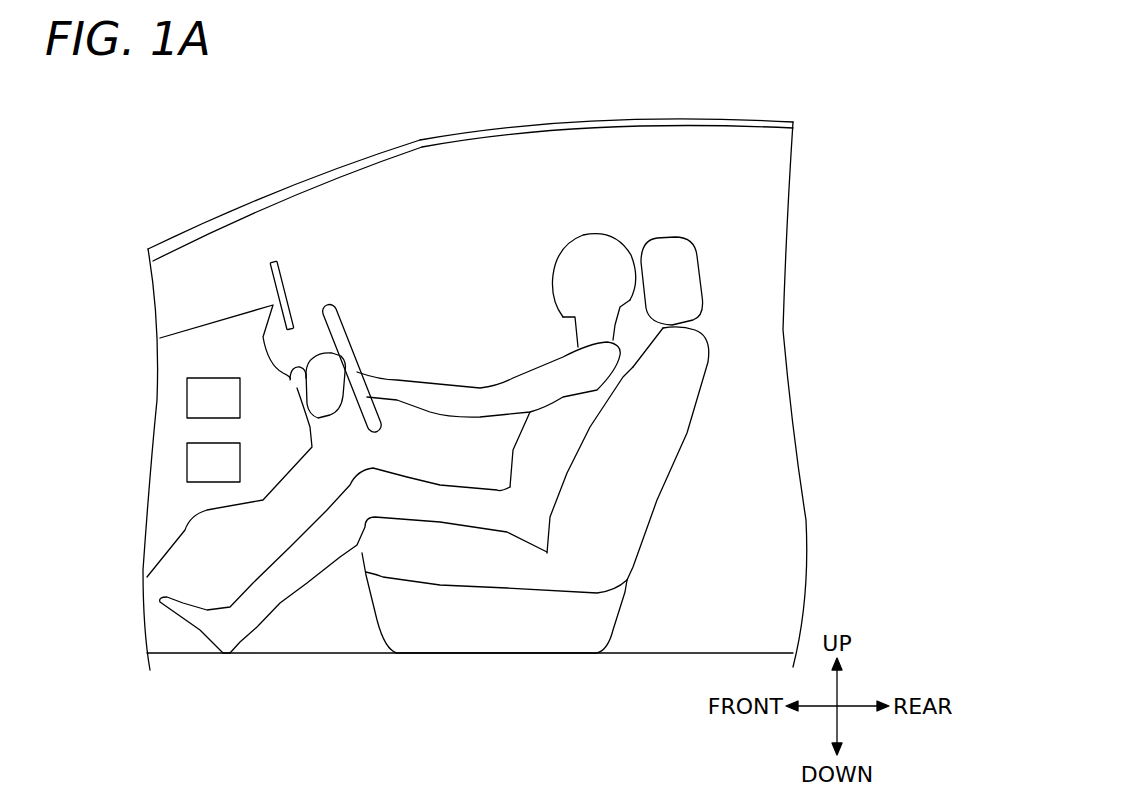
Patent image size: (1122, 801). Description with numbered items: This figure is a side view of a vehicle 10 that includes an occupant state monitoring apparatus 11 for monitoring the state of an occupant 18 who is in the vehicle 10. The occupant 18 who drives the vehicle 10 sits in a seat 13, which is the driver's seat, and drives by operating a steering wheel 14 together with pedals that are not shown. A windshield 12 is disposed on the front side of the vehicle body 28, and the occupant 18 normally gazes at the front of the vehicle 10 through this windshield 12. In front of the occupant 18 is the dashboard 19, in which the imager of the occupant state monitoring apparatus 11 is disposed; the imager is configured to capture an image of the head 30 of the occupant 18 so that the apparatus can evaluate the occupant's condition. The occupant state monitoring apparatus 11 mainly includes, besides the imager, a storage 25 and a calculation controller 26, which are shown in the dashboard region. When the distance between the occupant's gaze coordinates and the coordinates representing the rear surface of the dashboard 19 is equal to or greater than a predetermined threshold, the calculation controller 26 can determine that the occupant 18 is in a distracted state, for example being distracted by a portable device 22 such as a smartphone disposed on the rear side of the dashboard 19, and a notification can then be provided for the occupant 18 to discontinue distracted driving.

The vehicle 10 is at (530, 110).
The occupant state monitoring apparatus 11 is at (311, 164).
The windshield 12 is at (245, 206).
The seat 13 is at (667, 234).
The steering wheel 14 is at (325, 303).
The occupant 18 is at (593, 236).
The dashboard 19 is at (193, 337).
The portable device 22 is at (278, 262).
The storage 25 is at (187, 465).
The calculation controller 26 is at (187, 400).
The vehicle body 28 is at (376, 139).
The head 30 is at (583, 247).